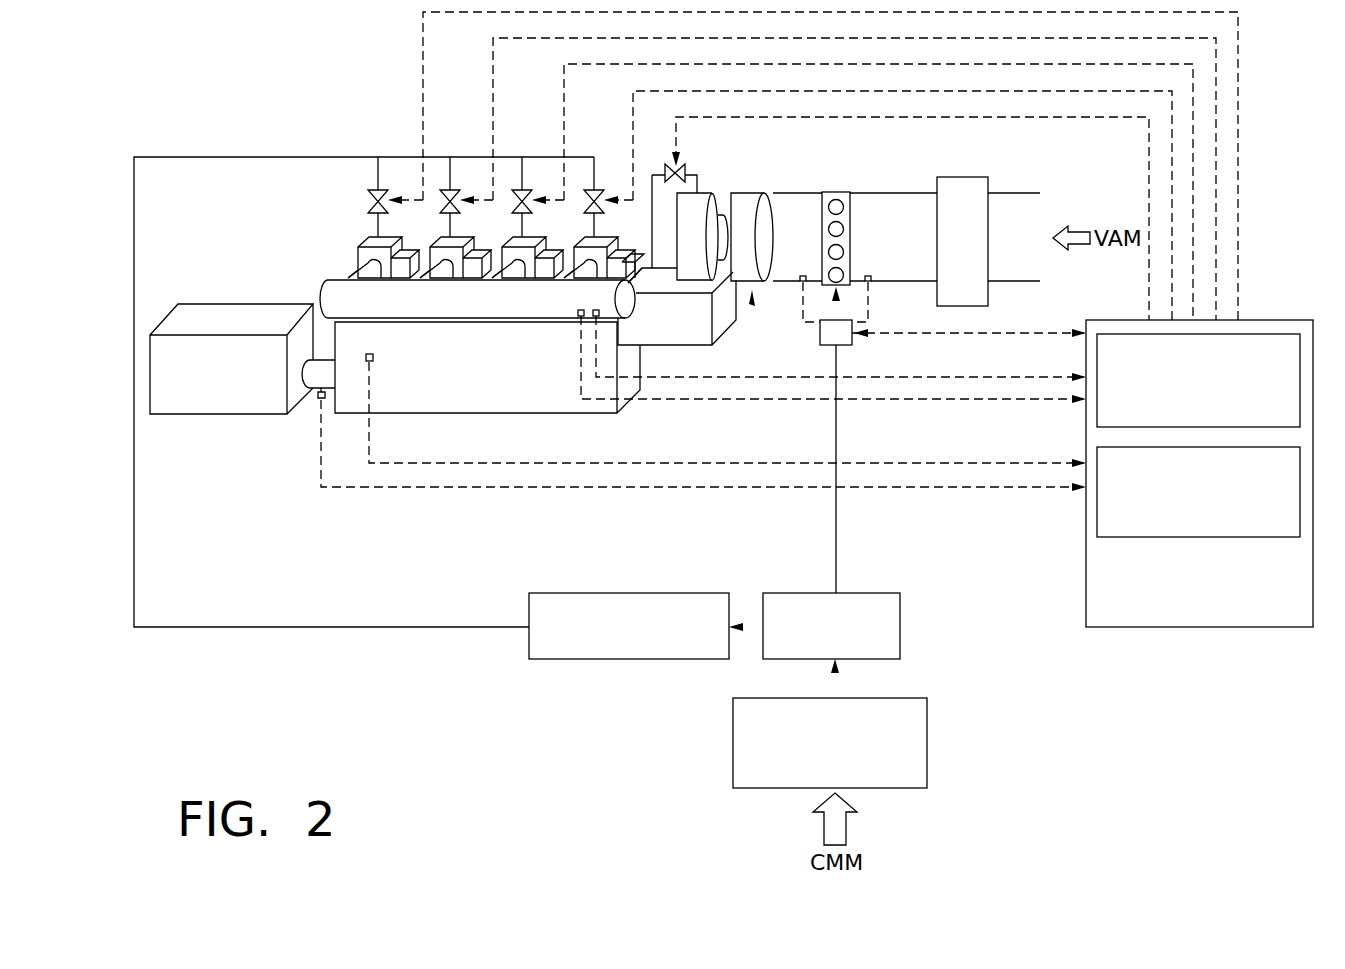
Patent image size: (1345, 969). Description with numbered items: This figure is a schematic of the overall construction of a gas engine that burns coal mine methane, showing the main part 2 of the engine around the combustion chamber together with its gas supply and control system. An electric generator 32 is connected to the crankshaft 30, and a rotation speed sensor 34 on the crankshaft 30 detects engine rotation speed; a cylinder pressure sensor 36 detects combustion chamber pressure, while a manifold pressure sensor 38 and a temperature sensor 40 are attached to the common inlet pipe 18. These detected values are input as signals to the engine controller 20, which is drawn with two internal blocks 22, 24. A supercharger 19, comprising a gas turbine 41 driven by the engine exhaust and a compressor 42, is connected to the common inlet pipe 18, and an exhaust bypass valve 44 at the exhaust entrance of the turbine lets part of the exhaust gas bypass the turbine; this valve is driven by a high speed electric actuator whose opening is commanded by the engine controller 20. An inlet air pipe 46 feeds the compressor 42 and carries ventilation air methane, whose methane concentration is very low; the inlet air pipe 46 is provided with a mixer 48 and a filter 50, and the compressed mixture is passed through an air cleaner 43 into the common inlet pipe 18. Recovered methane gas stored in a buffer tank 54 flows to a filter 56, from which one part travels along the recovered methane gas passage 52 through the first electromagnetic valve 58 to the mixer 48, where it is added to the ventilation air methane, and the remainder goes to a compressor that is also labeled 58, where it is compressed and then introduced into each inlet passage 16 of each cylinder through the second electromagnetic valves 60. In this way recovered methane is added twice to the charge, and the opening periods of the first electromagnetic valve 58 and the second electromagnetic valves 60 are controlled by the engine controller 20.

The main part 2 is at (478, 383).
The inlet passage 16 is at (365, 267).
The common inlet pipe 18 is at (330, 286).
The supercharger 19 is at (753, 303).
The engine controller 20 is at (1208, 447).
The controller module 22 is at (1212, 376).
The controller module 24 is at (1212, 487).
The crankshaft 30 is at (321, 370).
The electric generator 32 is at (217, 416).
The rotation speed sensor 34 is at (318, 400).
The cylinder pressure sensor 36 is at (373, 361).
The manifold pressure sensor 38 is at (579, 311).
The temperature sensor 40 is at (593, 318).
The gas turbine 41 is at (702, 195).
The compressor 42 is at (750, 205).
The air cleaner 43 is at (678, 317).
The exhaust bypass valve 44 is at (672, 142).
The inlet air pipe 46 is at (890, 193).
The mixer 48 is at (838, 192).
The filter 50 is at (990, 186).
The recovered methane gas passage 52 is at (838, 540).
The buffer tank 54 is at (912, 745).
The filter 56 is at (878, 628).
The first electromagnetic valve 58 is at (853, 338).
The second electromagnetic valves 60 is at (377, 185).